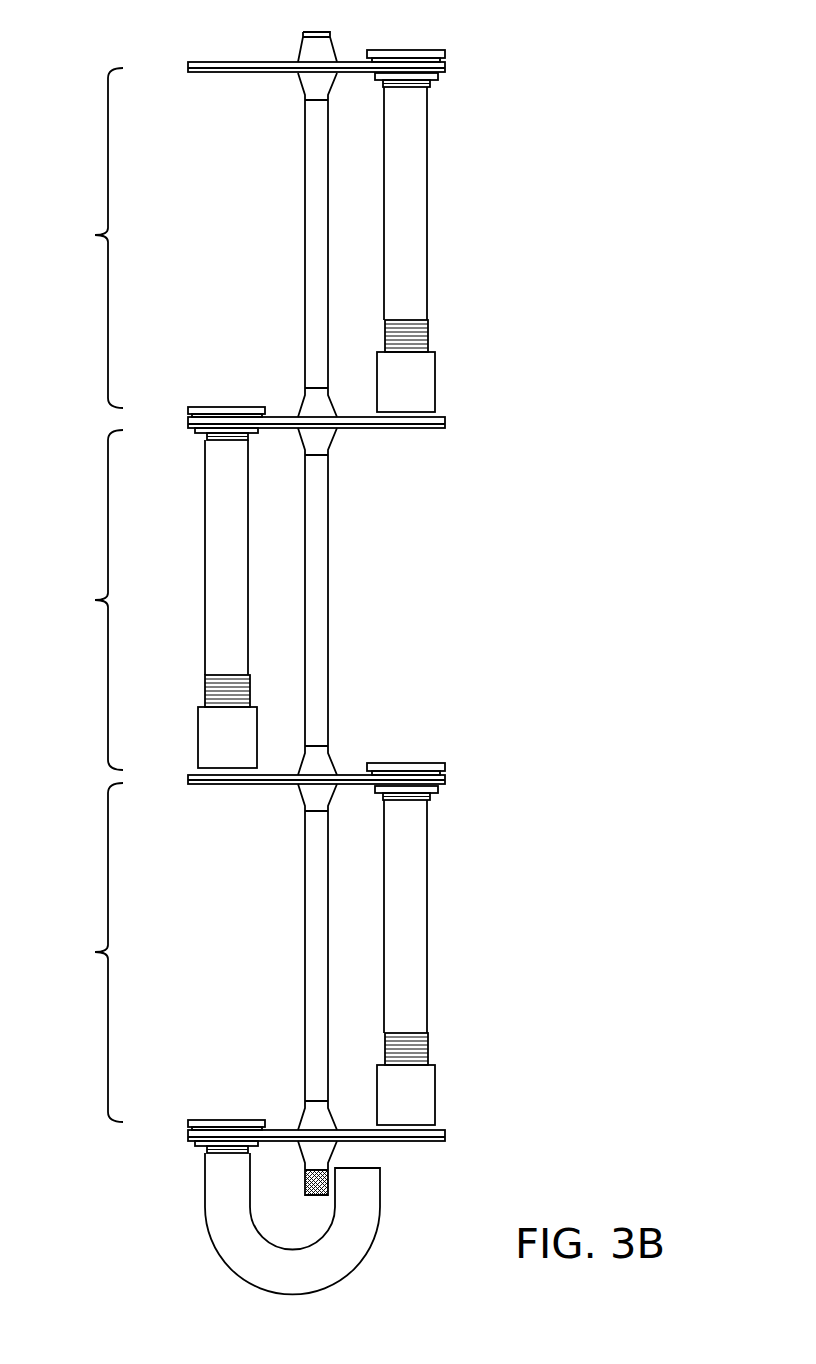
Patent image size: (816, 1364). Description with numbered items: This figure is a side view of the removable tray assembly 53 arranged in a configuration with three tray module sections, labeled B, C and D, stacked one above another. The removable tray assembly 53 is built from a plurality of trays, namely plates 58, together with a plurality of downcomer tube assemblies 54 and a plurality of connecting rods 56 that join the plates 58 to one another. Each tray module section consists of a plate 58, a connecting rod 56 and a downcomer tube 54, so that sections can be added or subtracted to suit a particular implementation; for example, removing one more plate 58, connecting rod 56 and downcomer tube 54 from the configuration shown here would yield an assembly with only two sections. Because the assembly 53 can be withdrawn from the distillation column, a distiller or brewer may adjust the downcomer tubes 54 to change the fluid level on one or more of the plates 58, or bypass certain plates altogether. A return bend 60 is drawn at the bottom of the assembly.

The removable tray assembly 53 is at (127, 40).
The downcomer tube assembly 54 is at (408, 197).
The connecting rod 56 is at (312, 258).
The plate 58 is at (203, 62).
The U-shaped return bend 60 is at (337, 1263).